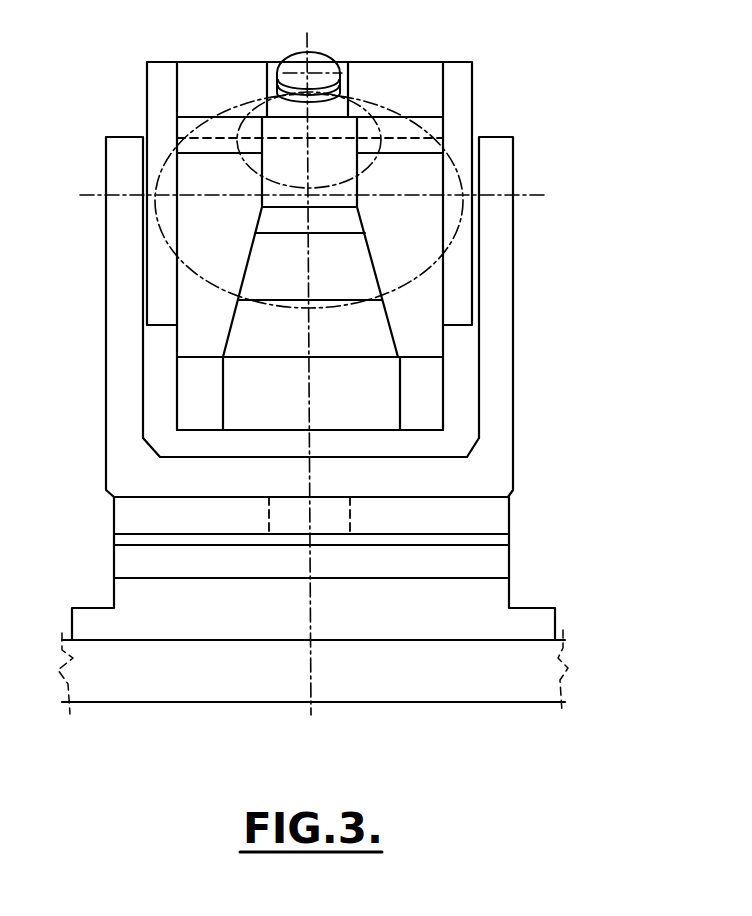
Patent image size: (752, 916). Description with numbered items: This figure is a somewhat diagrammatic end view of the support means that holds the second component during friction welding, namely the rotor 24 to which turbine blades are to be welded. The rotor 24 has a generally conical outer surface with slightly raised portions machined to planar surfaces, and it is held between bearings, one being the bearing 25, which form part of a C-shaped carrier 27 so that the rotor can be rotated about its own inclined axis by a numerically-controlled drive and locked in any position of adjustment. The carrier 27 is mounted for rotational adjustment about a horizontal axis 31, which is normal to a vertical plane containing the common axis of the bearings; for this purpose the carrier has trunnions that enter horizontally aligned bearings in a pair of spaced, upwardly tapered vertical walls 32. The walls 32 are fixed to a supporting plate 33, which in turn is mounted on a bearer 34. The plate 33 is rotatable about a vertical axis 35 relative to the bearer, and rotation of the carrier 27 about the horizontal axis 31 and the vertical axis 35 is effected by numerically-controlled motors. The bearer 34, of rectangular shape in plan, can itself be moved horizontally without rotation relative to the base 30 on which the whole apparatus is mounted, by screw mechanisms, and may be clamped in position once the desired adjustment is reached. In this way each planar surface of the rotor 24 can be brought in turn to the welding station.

The rotor 24 is at (205, 283).
The bearing 25 is at (320, 63).
The C-shaped carrier 27 is at (453, 88).
The base 30 is at (547, 688).
The horizontal axis 31 is at (530, 194).
The vertical walls 32 is at (120, 360).
The supporting plate 33 is at (467, 476).
The bearer 34 is at (493, 563).
The vertical axis 35 is at (315, 667).